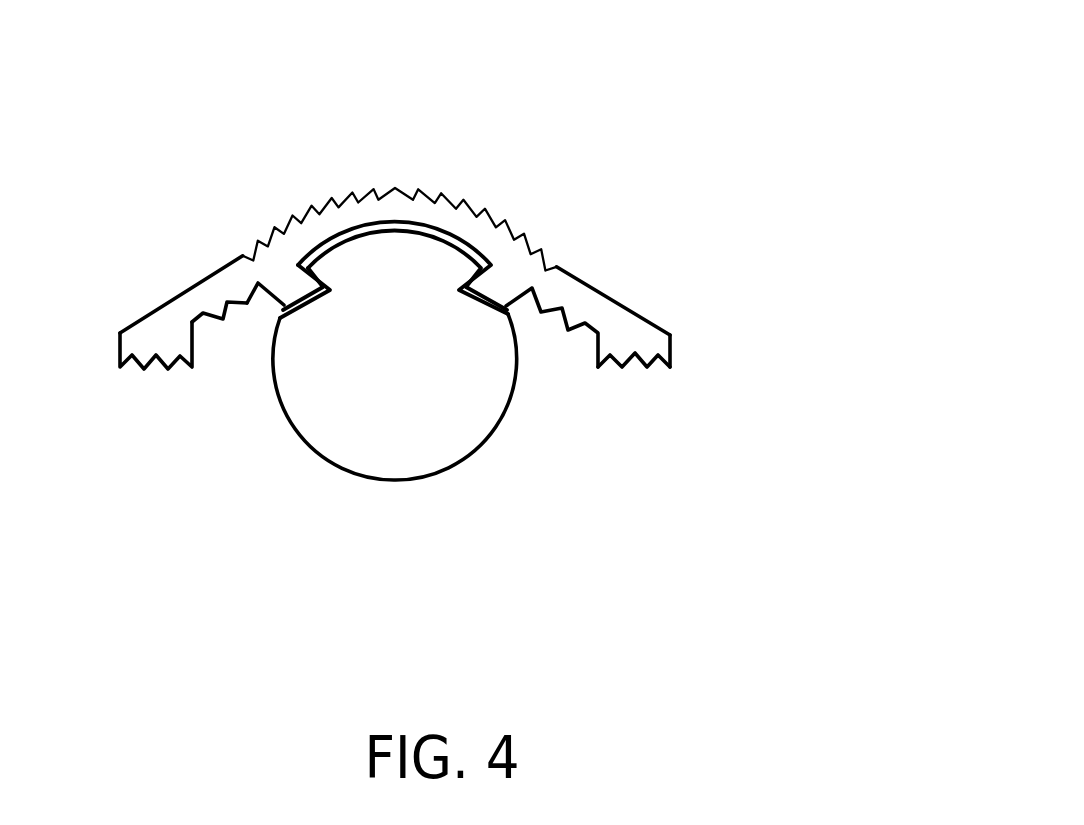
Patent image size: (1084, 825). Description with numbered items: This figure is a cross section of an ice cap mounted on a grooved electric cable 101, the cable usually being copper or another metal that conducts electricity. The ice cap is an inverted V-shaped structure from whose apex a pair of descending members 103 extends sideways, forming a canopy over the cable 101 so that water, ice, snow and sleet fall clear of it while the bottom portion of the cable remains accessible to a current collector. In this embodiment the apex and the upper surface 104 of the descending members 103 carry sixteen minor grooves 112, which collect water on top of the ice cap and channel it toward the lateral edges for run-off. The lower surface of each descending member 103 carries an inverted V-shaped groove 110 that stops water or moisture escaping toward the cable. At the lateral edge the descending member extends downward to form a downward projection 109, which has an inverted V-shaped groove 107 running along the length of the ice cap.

The grooved electric cable 101 is at (432, 380).
The descending members 103 is at (227, 283).
The upper surface 104 is at (582, 252).
The inverted V-shaped groove 107 is at (638, 367).
The downward projection 109 is at (670, 348).
The inverted V-shaped groove 110 is at (227, 302).
The minor grooves 112 is at (413, 193).